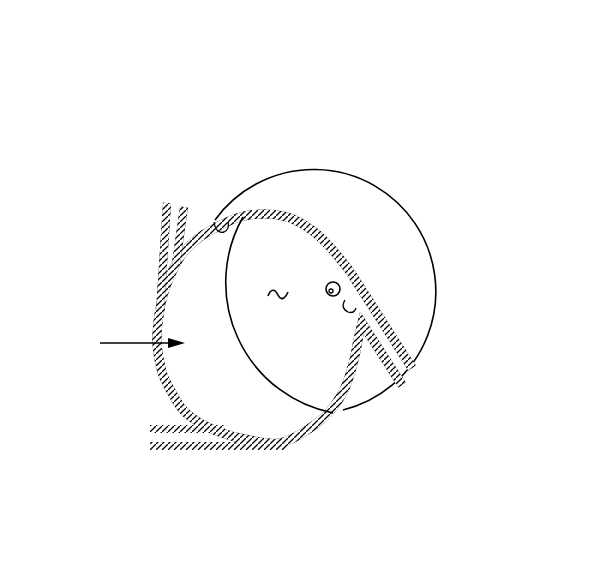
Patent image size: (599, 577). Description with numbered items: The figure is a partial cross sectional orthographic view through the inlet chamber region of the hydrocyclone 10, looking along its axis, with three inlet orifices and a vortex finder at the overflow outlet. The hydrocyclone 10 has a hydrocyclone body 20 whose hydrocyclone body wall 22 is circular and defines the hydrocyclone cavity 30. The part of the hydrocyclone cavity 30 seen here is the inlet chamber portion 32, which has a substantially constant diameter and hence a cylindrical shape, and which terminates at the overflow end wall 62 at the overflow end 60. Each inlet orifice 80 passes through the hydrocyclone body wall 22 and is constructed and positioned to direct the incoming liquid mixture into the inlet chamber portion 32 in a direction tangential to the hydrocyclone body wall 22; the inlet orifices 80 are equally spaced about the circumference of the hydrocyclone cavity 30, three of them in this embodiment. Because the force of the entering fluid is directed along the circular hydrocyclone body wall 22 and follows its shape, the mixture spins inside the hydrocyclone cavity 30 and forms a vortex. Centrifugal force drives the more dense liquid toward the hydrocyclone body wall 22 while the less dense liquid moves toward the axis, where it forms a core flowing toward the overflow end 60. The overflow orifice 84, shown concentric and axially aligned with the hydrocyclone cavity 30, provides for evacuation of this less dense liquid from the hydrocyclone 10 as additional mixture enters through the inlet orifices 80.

The hydrocyclone 10 is at (400, 133).
The hydrocyclone body 20 is at (417, 325).
The hydrocyclone body wall 22 is at (217, 218).
The hydrocyclone cavity 30 is at (313, 380).
The inlet chamber portion 32 is at (129, 344).
The overflow end 60 is at (337, 170).
The overflow end wall 62 is at (279, 282).
The inlet orifice 80 is at (358, 293).
The overflow orifice 84 is at (340, 287).